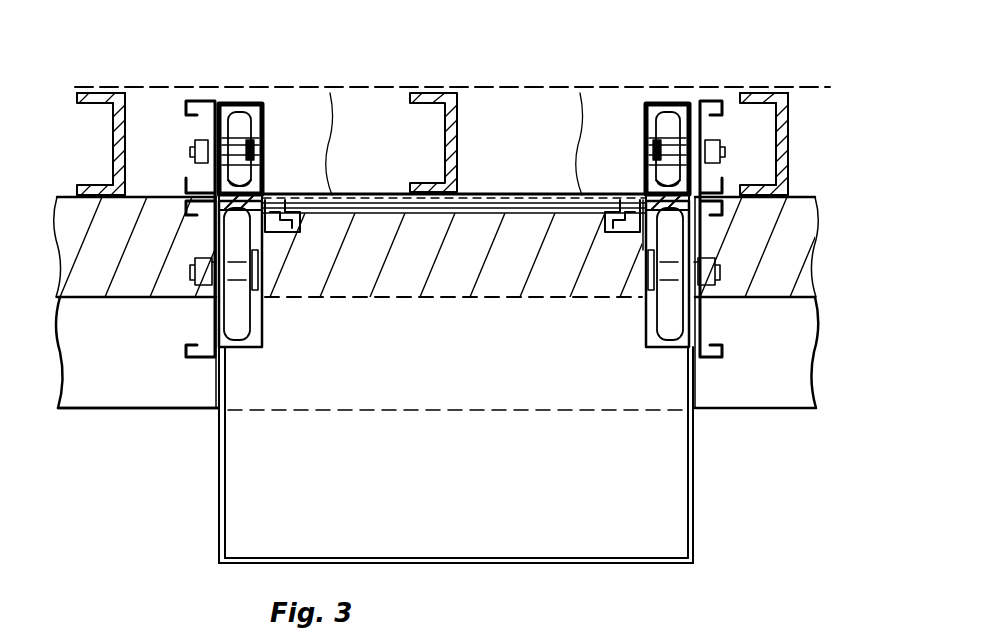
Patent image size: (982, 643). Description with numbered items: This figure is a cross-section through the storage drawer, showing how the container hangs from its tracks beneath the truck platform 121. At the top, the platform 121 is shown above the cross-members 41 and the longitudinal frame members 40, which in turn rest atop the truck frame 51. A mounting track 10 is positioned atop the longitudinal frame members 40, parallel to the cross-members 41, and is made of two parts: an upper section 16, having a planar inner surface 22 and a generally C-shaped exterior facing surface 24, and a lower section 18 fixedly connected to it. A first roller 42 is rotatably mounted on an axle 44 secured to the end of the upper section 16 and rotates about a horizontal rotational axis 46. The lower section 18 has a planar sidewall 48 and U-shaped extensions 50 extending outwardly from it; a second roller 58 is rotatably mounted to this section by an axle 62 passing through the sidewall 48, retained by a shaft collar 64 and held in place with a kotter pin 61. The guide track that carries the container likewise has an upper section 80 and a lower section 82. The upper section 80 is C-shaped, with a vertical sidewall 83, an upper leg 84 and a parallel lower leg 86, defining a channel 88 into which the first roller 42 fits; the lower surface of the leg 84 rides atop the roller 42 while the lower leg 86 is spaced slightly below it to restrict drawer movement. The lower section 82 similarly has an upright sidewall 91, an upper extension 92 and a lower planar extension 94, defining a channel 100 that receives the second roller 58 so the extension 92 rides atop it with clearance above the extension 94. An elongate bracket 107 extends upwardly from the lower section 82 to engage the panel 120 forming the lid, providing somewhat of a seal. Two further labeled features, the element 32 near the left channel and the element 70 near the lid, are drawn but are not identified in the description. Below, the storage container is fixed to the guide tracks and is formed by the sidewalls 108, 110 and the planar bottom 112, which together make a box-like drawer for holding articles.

The mounting track 10 is at (200, 102).
The upper section 16 is at (196, 142).
The lower section 18 is at (206, 330).
The inner surface 22 is at (225, 105).
The exterior facing surface 24 is at (180, 100).
The channel web 32 is at (196, 153).
The longitudinal frame member 40 is at (56, 250).
The cross-member 41 is at (108, 132).
The first roller 42 is at (258, 110).
The axle 44 is at (240, 112).
The rotational axis 46 is at (258, 150).
The sidewall 48 is at (210, 205).
The U-shaped extension 50 is at (182, 198).
The truck frame 51 is at (110, 380).
The second roller 58 is at (250, 262).
The kotter pin 61 is at (262, 278).
The axle 62 is at (194, 270).
The shaft collar 64 is at (205, 243).
The top panel 70 is at (505, 195).
The upper section 80 is at (265, 145).
The lower section 82 is at (262, 340).
The sidewall 83 is at (264, 104).
The leg 84 is at (233, 112).
The lower leg 86 is at (263, 200).
The channel 88 is at (250, 110).
The upright sidewall 91 is at (264, 300).
The upper extension 92 is at (263, 245).
The lower planar extension 94 is at (262, 355).
The channel 100 is at (262, 320).
The elongate bracket 107 is at (290, 218).
The sidewall 108 is at (225, 525).
The sidewall 110 is at (688, 525).
The bottom 112 is at (445, 556).
The panel 120 is at (490, 215).
The platform 121 is at (490, 87).